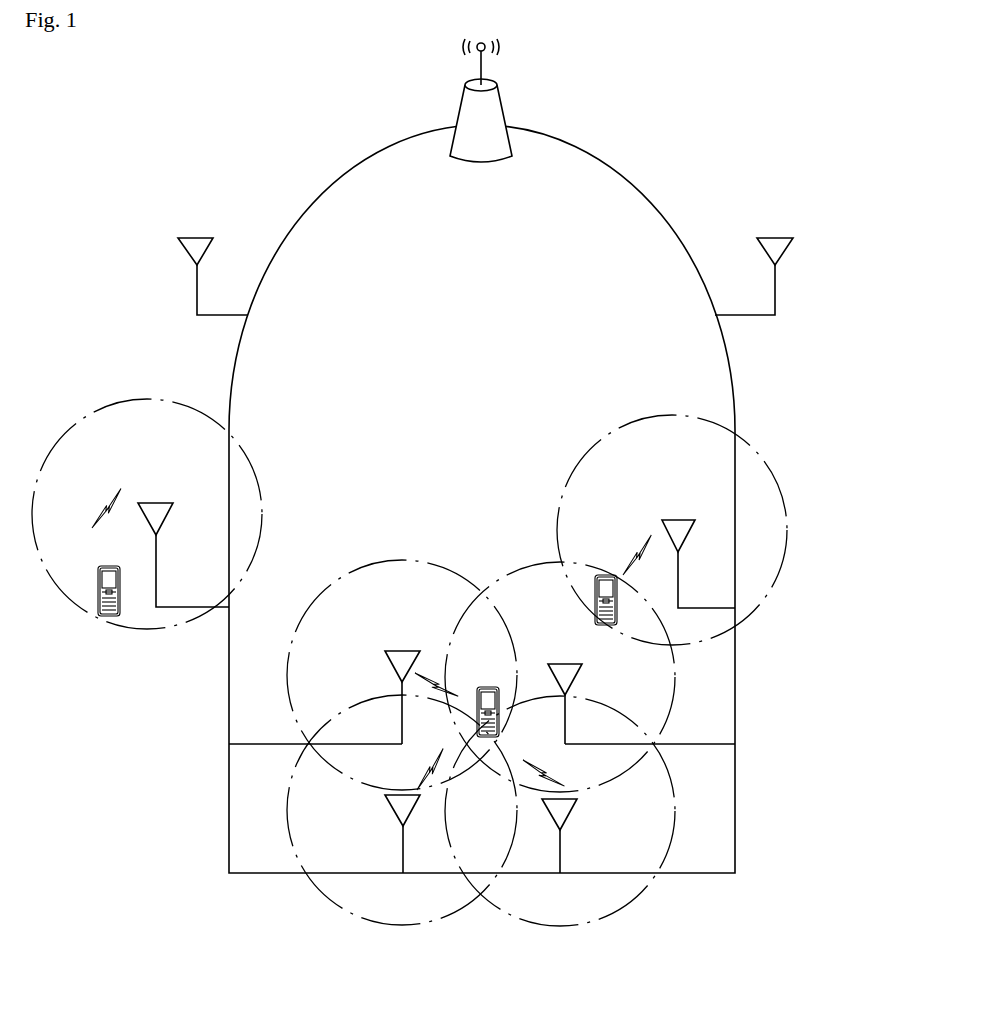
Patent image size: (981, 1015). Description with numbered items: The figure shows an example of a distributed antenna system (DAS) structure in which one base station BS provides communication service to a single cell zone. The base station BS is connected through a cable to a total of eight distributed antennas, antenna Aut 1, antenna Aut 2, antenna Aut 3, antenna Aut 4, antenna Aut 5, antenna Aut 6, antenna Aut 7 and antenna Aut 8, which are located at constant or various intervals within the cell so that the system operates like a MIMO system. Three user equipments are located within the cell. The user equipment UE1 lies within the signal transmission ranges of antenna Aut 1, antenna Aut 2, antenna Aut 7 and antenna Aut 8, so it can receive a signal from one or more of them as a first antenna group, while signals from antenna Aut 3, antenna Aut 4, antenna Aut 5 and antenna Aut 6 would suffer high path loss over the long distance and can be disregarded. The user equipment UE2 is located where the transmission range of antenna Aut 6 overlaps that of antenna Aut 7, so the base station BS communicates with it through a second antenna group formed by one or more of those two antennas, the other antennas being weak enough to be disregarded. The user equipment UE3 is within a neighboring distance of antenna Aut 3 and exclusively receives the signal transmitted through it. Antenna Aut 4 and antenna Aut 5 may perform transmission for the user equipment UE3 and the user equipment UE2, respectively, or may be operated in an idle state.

The base station BS is at (481, 100).
The antenna 1 Aut 1 is at (402, 810).
The antenna 2 Aut 2 is at (402, 675).
The antenna 3 Aut 3 is at (147, 514).
The antenna 4 Aut 4 is at (190, 276).
The antenna 5 Aut 5 is at (777, 276).
The antenna 6 Aut 6 is at (672, 530).
The antenna 7 Aut 7 is at (560, 677).
The antenna 8 Aut 8 is at (560, 811).
The user equipment 1 UE1 is at (486, 728).
The user equipment 2 UE2 is at (633, 609).
The user equipment 3 UE3 is at (108, 609).